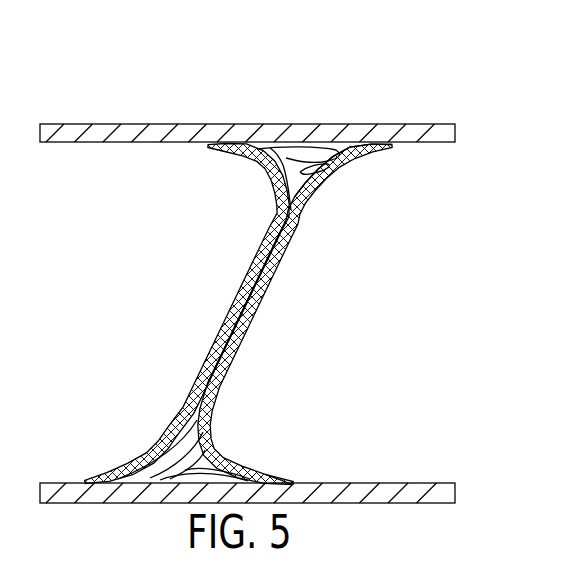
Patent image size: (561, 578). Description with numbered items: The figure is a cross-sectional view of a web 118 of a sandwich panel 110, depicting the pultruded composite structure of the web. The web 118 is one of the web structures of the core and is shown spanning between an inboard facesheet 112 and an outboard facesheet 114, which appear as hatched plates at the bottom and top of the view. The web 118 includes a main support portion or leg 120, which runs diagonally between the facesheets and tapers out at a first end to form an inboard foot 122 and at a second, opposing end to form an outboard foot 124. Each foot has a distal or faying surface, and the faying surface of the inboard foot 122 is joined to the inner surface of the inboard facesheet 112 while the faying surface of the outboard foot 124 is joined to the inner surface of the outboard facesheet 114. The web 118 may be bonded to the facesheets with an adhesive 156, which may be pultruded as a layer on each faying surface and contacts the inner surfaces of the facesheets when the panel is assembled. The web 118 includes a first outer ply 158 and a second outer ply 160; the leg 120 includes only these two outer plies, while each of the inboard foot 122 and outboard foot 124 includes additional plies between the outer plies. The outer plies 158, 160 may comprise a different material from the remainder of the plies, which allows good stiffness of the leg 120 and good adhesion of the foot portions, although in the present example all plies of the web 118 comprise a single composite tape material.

The sandwich panel 110 is at (145, 100).
The inboard facesheet 112 is at (53, 483).
The outboard facesheet 114 is at (58, 136).
The web 118 is at (317, 278).
The leg 120 is at (275, 310).
The inboard foot 122 is at (228, 452).
The outboard foot 124 is at (338, 173).
The adhesive 156 is at (392, 145).
The first outer ply 158 is at (276, 207).
The second outer ply 160 is at (300, 209).